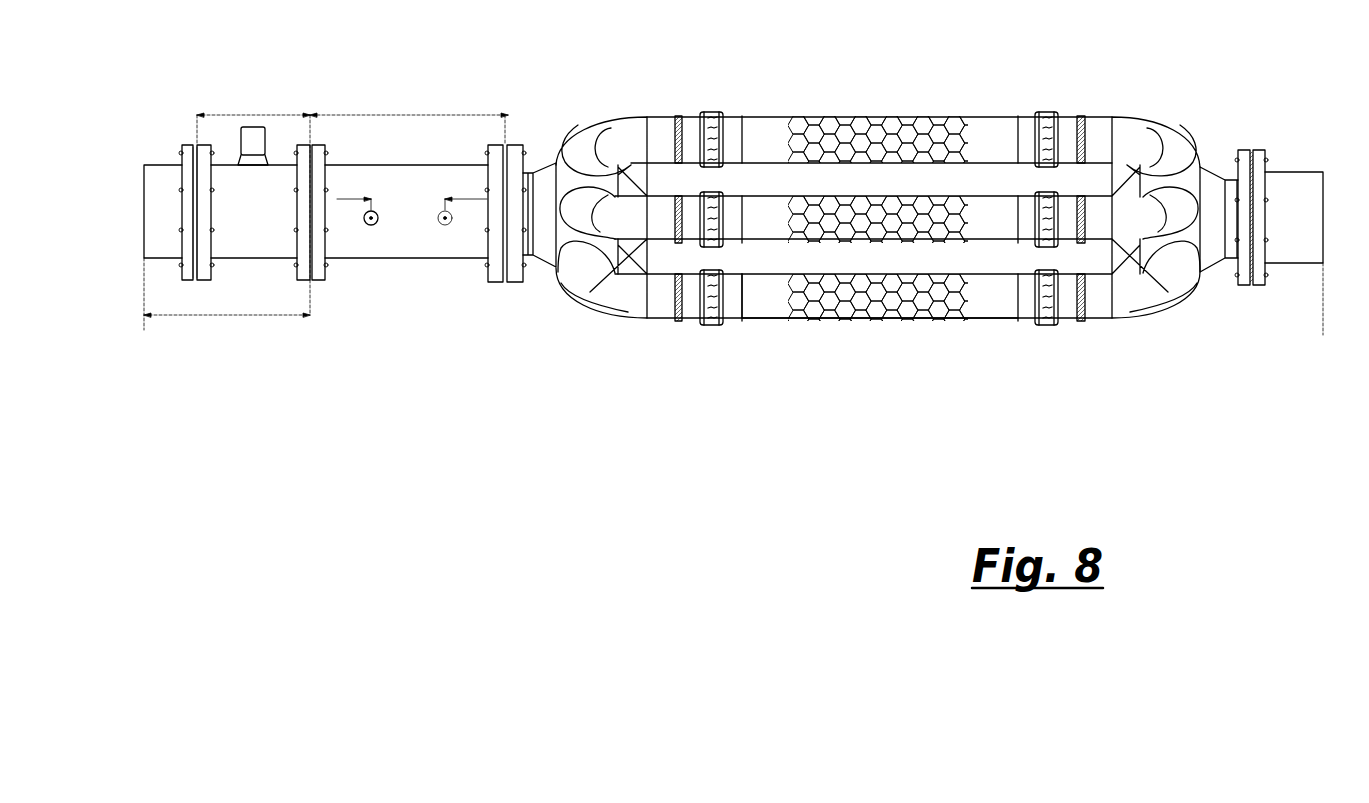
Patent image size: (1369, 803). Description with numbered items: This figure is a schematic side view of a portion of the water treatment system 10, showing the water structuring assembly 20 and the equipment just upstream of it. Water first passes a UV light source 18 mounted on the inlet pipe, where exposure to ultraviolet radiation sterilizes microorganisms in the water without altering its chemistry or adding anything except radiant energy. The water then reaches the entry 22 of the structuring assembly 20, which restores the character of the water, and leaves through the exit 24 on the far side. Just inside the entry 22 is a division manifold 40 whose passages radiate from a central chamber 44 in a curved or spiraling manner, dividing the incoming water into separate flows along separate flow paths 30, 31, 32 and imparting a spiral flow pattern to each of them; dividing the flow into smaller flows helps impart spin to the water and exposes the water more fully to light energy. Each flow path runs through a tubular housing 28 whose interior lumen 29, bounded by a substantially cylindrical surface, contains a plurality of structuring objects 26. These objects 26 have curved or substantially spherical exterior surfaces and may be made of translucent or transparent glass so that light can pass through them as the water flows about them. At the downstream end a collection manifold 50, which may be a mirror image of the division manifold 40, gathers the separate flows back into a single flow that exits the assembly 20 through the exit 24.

The exhaust system assembly 10 is at (733, 339).
The UV light source 18 is at (371, 226).
The water structuring assembly 20 is at (885, 239).
The entry 22 is at (508, 285).
The exit 24 is at (1253, 290).
The structuring objects 26 is at (823, 314).
The housing 28 is at (763, 320).
The interior lumen 29 is at (917, 125).
The flow path 30 is at (615, 130).
The flow path 31 is at (628, 222).
The flow path 32 is at (635, 303).
The division manifold 40 is at (590, 336).
The central chamber 44 is at (542, 172).
The collection manifold 50 is at (1210, 308).